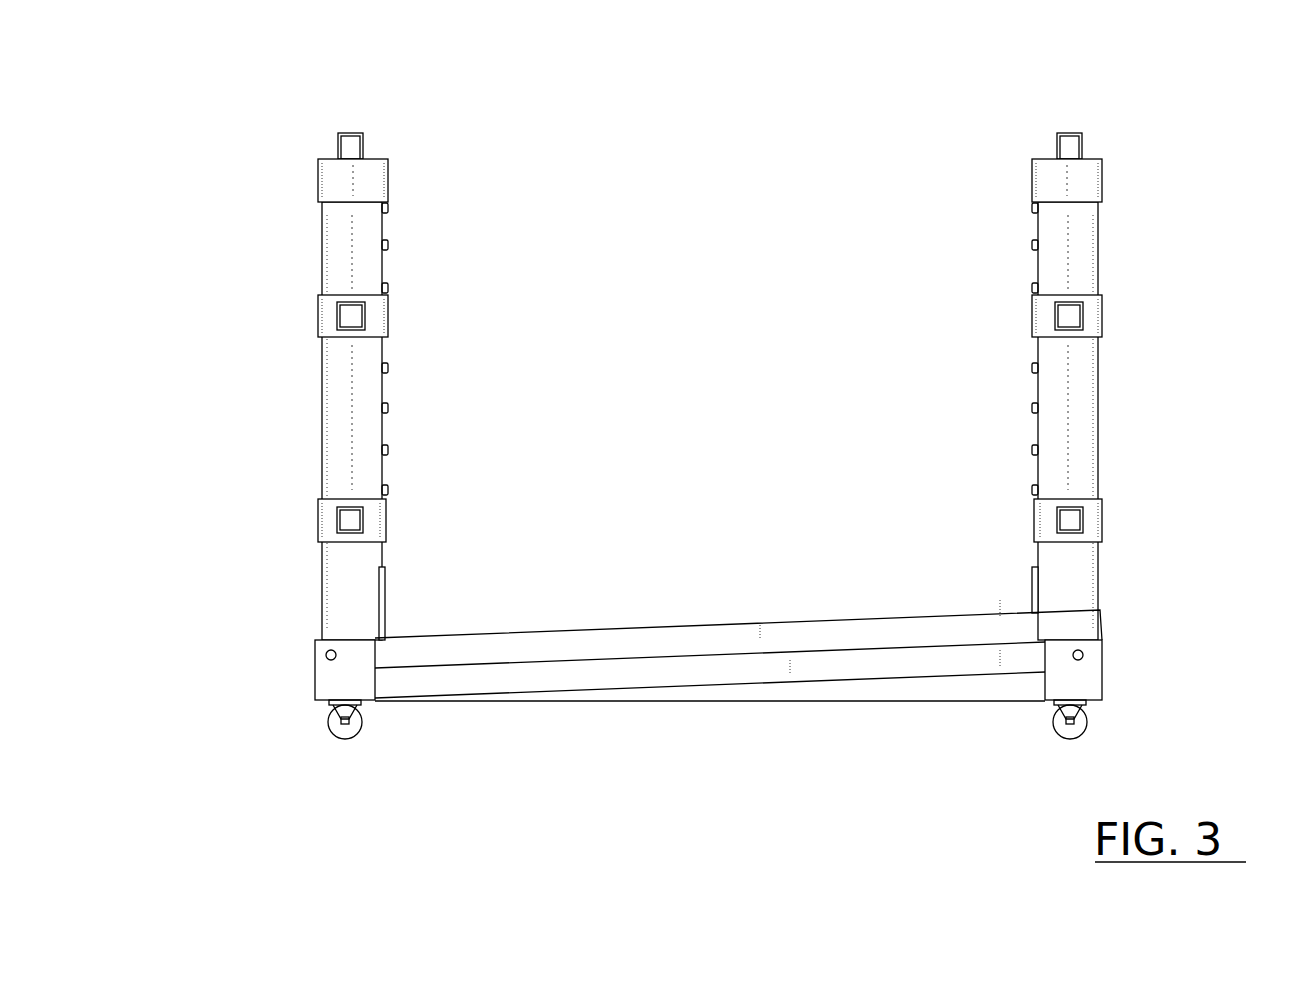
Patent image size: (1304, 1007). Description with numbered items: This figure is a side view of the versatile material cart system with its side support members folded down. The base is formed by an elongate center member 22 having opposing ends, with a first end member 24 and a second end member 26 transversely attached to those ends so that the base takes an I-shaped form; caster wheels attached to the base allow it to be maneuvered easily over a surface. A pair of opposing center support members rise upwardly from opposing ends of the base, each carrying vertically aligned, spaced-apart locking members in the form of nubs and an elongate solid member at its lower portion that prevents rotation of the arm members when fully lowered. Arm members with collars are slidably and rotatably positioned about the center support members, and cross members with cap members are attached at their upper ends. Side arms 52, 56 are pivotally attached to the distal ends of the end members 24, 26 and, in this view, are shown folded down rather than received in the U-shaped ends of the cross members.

The center member 22 is at (872, 692).
The first end member 24 is at (1087, 680).
The second end member 26 is at (318, 677).
The side arm 52 is at (695, 672).
The side arm 56 is at (667, 640).